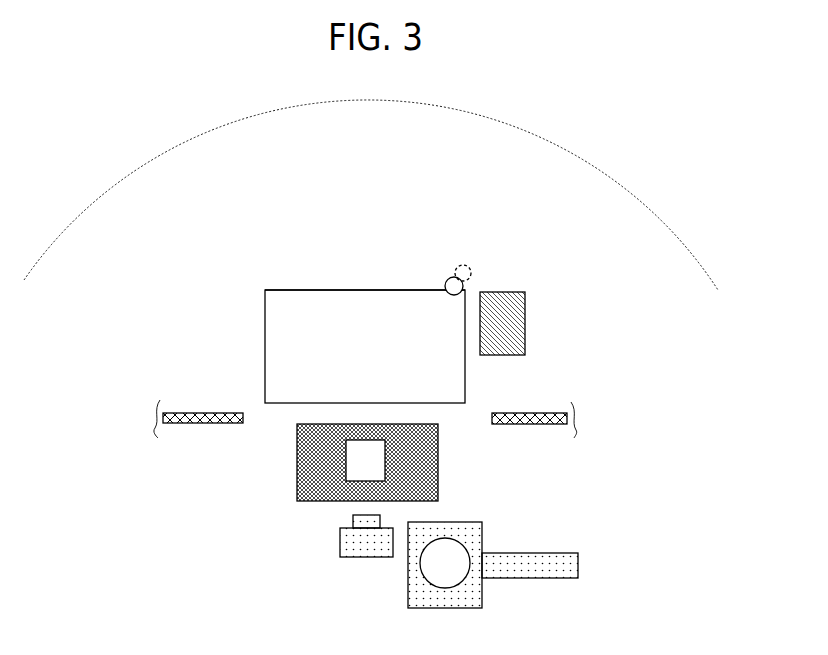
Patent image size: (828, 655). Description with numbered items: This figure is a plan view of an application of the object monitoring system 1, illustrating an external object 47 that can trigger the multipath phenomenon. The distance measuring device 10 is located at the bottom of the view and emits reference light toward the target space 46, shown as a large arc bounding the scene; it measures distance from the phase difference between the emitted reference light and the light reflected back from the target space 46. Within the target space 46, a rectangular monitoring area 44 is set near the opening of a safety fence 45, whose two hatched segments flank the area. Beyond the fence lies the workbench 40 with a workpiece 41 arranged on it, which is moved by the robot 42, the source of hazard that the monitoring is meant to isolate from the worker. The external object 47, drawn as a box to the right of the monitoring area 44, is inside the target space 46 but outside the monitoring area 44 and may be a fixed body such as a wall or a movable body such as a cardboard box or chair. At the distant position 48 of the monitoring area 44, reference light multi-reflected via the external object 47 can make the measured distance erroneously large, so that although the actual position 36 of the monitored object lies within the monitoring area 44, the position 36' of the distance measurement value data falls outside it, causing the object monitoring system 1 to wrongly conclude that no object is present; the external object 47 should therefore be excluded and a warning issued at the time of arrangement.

The object monitoring system 1 is at (243, 520).
The distance measuring device 10 is at (350, 540).
The actual position of the monitored object 36 is at (434, 223).
The position of the distance measurement value data 36' is at (553, 201).
The workbench 40 is at (318, 463).
The workpiece 41 is at (372, 462).
The robot 42 is at (470, 543).
The monitoring area 44 is at (296, 290).
The safety fence 45 is at (527, 413).
The target space 46 is at (537, 158).
The external object 47 is at (517, 295).
The distant position of the monitoring area 48 is at (430, 300).